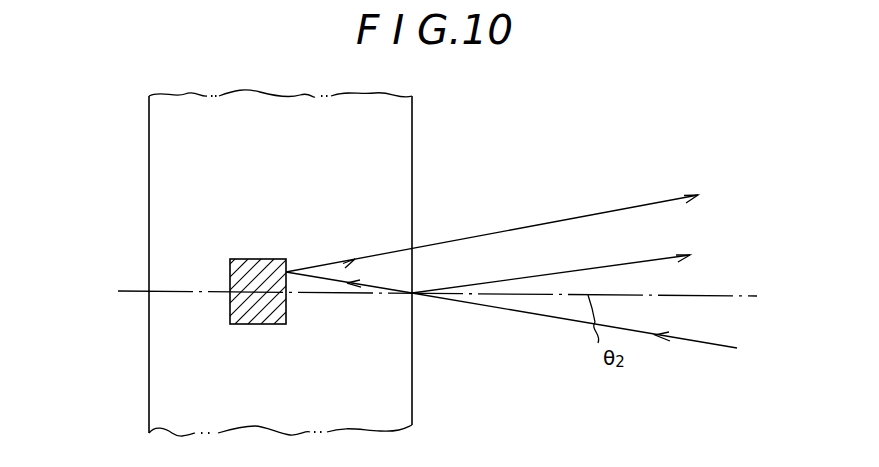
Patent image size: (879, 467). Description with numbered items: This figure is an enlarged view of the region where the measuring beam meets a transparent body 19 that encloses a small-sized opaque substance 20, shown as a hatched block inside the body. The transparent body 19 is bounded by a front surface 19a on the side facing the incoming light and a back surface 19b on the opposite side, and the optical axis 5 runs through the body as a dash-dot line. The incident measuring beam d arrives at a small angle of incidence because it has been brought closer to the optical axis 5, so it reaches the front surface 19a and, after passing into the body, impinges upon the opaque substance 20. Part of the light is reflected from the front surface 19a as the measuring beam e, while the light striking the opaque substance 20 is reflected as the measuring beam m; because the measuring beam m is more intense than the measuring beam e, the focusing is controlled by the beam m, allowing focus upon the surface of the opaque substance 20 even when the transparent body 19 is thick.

The transparent body 19 is at (300, 110).
The front surface 19a is at (414, 398).
The back surface 19b is at (149, 402).
The opaque substance 20 is at (230, 323).
The optical axis 5 is at (725, 296).
The measuring beam reflected from the opaque substance m is at (540, 222).
The measuring beam reflected from the front surface e is at (600, 268).
The measuring beam d is at (642, 335).